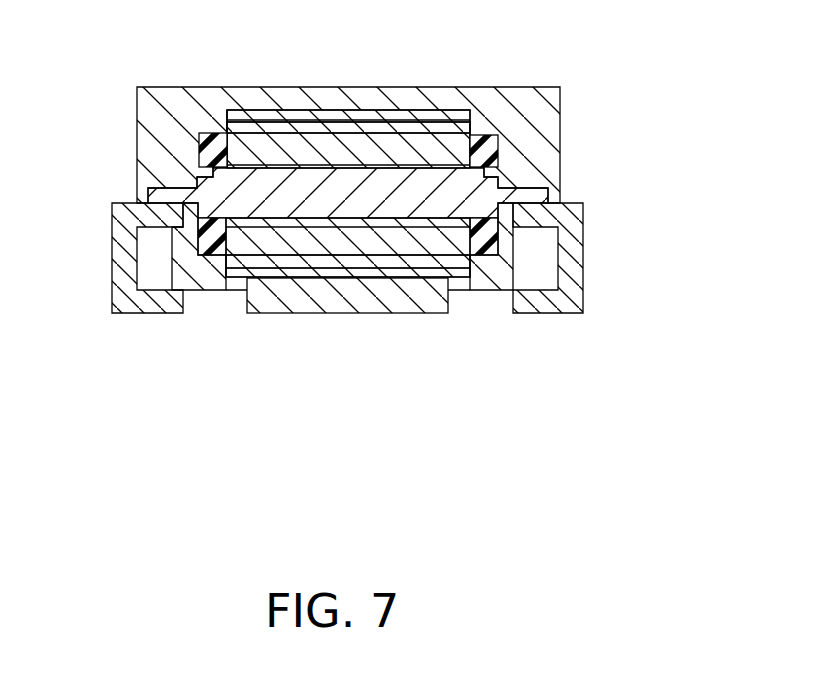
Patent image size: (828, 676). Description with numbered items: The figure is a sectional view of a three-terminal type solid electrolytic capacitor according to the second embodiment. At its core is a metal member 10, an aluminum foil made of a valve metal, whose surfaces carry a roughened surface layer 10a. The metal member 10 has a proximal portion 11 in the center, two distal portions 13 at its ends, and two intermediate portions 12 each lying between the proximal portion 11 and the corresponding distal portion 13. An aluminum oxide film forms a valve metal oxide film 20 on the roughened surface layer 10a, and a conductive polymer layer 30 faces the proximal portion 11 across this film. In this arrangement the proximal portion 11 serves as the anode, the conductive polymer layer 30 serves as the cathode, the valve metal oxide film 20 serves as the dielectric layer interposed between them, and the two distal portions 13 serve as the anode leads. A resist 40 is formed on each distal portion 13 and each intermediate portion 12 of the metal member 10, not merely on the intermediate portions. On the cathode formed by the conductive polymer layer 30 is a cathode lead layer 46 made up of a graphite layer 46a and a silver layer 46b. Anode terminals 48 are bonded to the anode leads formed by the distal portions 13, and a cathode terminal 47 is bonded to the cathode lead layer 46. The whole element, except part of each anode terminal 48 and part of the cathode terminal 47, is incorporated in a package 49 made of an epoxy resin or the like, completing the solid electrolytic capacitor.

The metal member 10 is at (352, 299).
The roughened surface layer 10a is at (249, 148).
The proximal portion 11 is at (329, 197).
The intermediate portion 12 is at (215, 196).
The distal portion 13 is at (557, 380).
The valve metal oxide film 20 is at (294, 133).
The conductive polymer layer 30 is at (355, 152).
The resist 40 is at (480, 135).
The cathode lead layer 46 is at (355, 380).
The graphite layer 46a is at (430, 262).
The silver layer 46b is at (383, 265).
The cathode terminal 47 is at (290, 300).
The anode terminal 48 is at (112, 245).
The package 49 is at (541, 114).